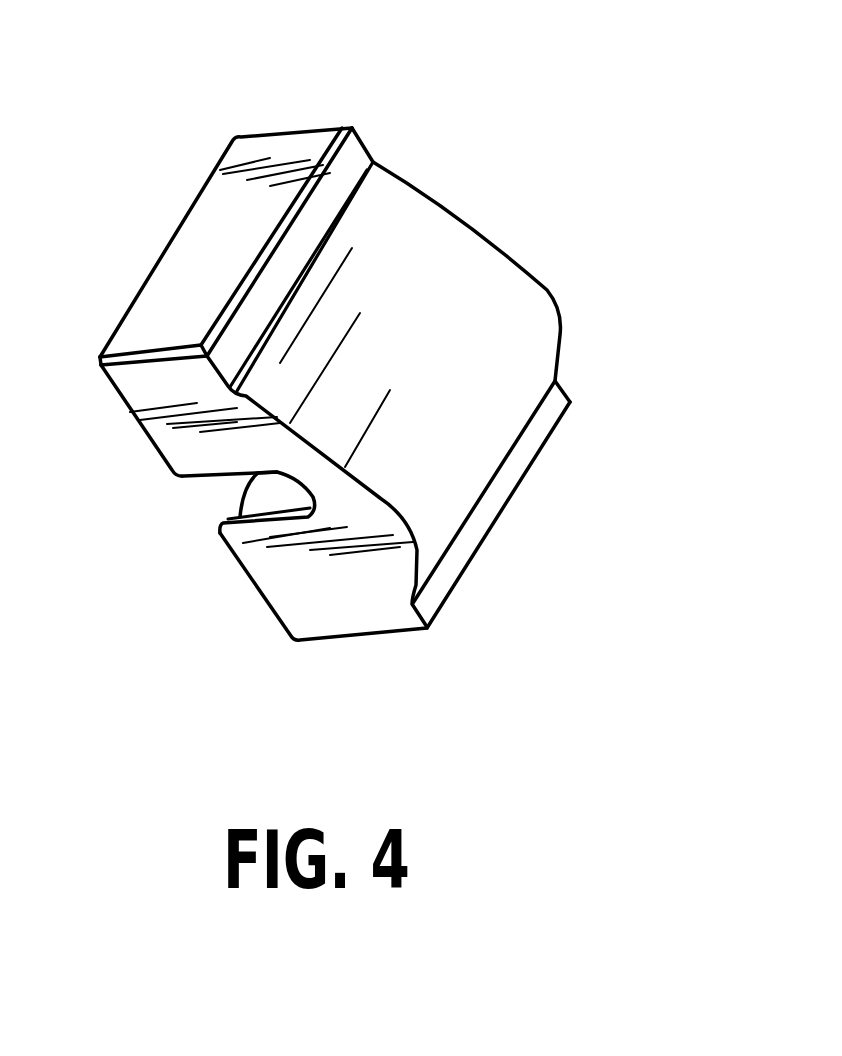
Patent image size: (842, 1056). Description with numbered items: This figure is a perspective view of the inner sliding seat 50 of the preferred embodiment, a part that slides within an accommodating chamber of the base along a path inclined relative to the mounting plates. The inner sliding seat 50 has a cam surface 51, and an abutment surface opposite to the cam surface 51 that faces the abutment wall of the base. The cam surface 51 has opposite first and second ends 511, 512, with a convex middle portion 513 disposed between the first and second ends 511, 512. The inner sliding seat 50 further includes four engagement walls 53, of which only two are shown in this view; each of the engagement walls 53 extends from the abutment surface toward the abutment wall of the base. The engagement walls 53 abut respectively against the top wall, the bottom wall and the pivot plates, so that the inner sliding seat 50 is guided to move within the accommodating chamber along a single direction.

The inner sliding seat 50 is at (374, 384).
The cam surface 51 is at (547, 292).
The first end 511 is at (520, 458).
The second end 512 is at (333, 187).
The convex middle portion 513 is at (548, 340).
The engagement walls 53 is at (190, 260).